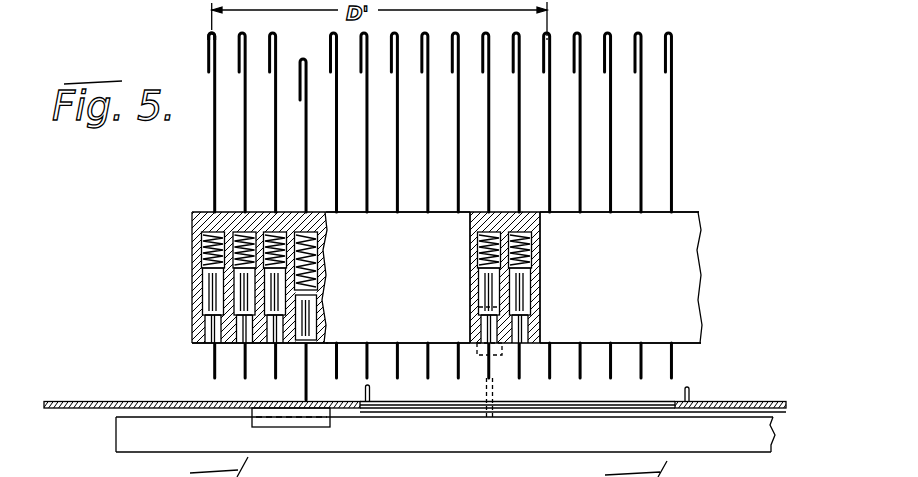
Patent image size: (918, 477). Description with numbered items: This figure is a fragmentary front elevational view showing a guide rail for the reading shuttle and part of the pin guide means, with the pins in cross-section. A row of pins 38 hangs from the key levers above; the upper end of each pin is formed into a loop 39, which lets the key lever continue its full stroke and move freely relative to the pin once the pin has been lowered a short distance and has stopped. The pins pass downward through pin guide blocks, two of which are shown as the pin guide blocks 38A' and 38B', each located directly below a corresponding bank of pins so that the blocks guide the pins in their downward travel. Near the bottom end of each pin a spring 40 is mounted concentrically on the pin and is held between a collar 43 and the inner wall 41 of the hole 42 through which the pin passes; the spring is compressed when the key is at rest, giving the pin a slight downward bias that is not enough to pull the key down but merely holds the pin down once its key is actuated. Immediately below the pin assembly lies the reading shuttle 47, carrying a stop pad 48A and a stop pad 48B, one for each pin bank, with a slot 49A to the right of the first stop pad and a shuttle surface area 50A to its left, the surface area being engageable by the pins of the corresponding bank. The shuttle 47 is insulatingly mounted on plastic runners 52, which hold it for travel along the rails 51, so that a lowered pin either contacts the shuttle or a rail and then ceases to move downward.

The pin 38 is at (245, 152).
The loop 39 is at (206, 50).
The spring 40 is at (205, 250).
The inner wall 41 is at (199, 236).
The hole 42 is at (202, 344).
The collar 43 is at (210, 297).
The pin guide block 38A' is at (398, 277).
The pin guide block 38B' is at (620, 277).
The reading shuttle 47 is at (769, 400).
The stop pad 48A is at (371, 392).
The stop pad 48B is at (690, 397).
The slot 49A is at (513, 401).
The shuttle surface area 50A is at (291, 401).
The rail 51 is at (497, 440).
The plastic runner 52 is at (302, 422).